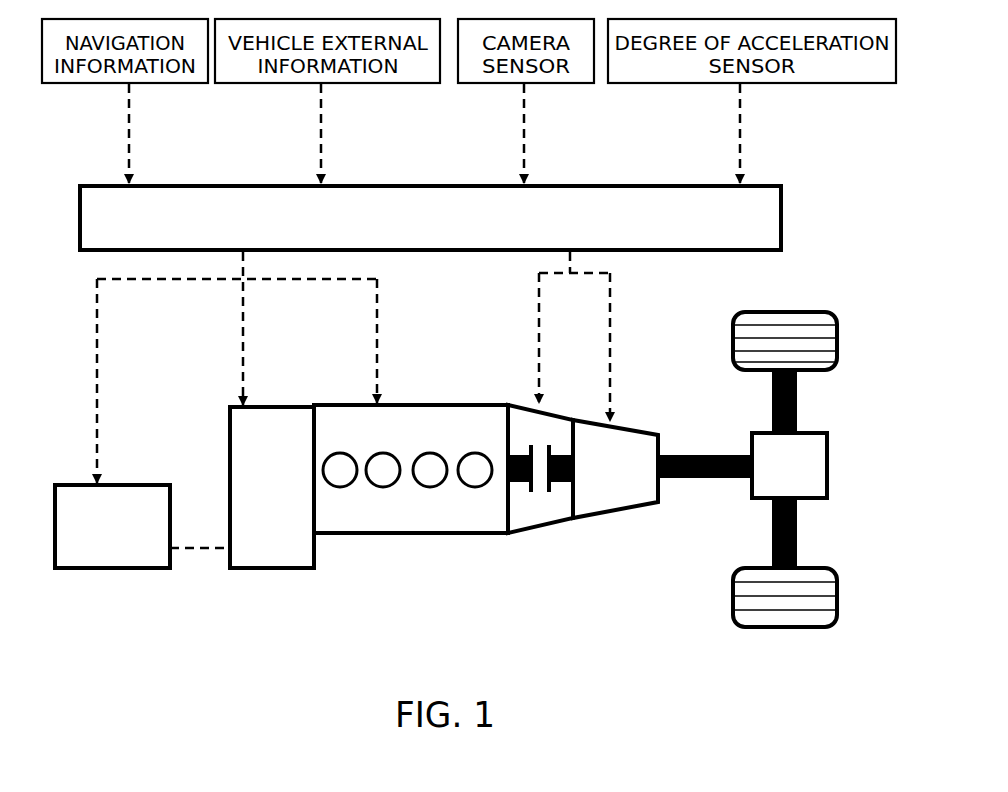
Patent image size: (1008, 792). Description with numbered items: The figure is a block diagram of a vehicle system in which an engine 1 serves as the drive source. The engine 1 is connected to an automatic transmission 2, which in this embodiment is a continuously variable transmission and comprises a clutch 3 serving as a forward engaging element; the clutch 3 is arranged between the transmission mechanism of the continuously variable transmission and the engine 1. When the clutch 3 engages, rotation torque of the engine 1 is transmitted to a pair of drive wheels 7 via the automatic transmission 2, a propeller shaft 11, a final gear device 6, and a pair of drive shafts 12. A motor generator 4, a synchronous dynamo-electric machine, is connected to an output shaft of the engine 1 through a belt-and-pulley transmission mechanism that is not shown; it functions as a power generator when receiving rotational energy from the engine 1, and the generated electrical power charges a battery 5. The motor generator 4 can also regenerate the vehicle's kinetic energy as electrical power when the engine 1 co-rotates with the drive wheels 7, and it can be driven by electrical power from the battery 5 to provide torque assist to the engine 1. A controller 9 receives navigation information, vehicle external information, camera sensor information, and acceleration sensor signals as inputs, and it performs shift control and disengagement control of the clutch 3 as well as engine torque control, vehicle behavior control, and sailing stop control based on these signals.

The engine 1 is at (382, 534).
The automatic transmission 2 is at (583, 545).
The clutch 3 is at (544, 500).
The motor generator 4 is at (258, 569).
The battery 5 is at (92, 569).
The final gear device 6 is at (828, 462).
The drive wheels 7 is at (830, 313).
The controller 9 is at (102, 218).
The propeller shaft 11 is at (687, 454).
The drive shafts 12 is at (772, 396).